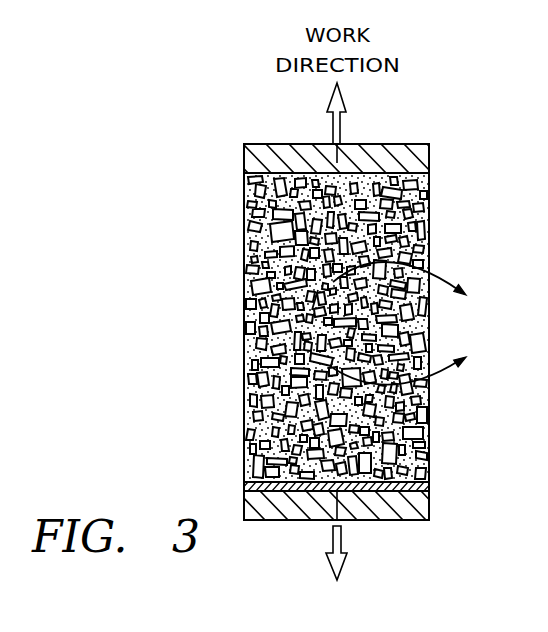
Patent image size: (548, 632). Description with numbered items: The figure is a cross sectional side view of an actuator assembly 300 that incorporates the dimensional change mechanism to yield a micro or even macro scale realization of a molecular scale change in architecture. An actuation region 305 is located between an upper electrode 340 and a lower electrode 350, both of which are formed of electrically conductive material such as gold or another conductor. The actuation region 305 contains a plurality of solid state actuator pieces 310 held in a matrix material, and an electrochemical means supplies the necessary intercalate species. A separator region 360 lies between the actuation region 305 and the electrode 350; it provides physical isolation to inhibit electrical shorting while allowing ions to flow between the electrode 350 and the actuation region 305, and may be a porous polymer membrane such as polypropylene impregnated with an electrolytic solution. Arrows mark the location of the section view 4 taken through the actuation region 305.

The actuator assembly 300 is at (205, 151).
The actuation region 305 is at (290, 327).
The solid state actuator pieces 310 is at (428, 233).
The electrode 340 is at (428, 163).
The electrode 350 is at (418, 511).
The separator region 360 is at (420, 471).
The section view 4 indicator 4 is at (397, 323).